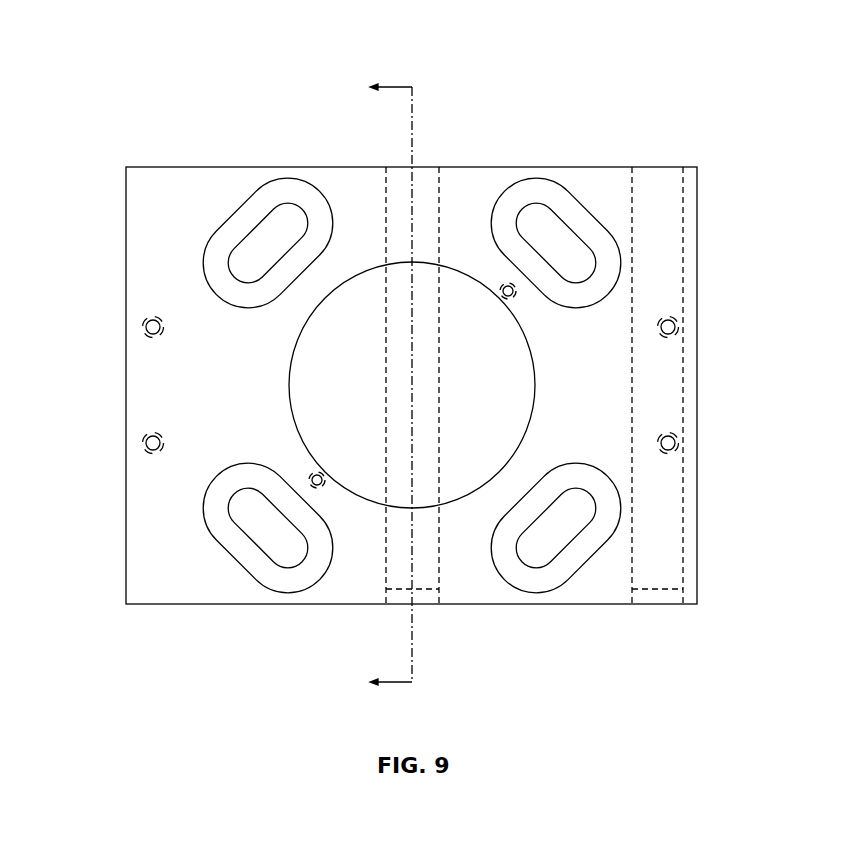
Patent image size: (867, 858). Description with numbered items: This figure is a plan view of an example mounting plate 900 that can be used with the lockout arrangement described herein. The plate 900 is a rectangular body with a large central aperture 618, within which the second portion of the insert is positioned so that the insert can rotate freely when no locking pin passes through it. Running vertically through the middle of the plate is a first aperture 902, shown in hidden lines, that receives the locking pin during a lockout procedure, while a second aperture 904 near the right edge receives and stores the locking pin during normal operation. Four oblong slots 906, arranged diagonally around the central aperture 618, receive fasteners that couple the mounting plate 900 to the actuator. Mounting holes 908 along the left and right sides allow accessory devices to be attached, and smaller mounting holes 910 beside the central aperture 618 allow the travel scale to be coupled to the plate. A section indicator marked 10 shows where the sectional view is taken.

The mounting plate 900 is at (574, 49).
The section line 10- 10 is at (374, 385).
The first aperture 902 is at (426, 168).
The second aperture 904 is at (655, 176).
The aperture 618 is at (380, 262).
The slots 906 is at (283, 190).
The mounting holes 908 is at (146, 325).
The mounting holes 910 is at (512, 297).